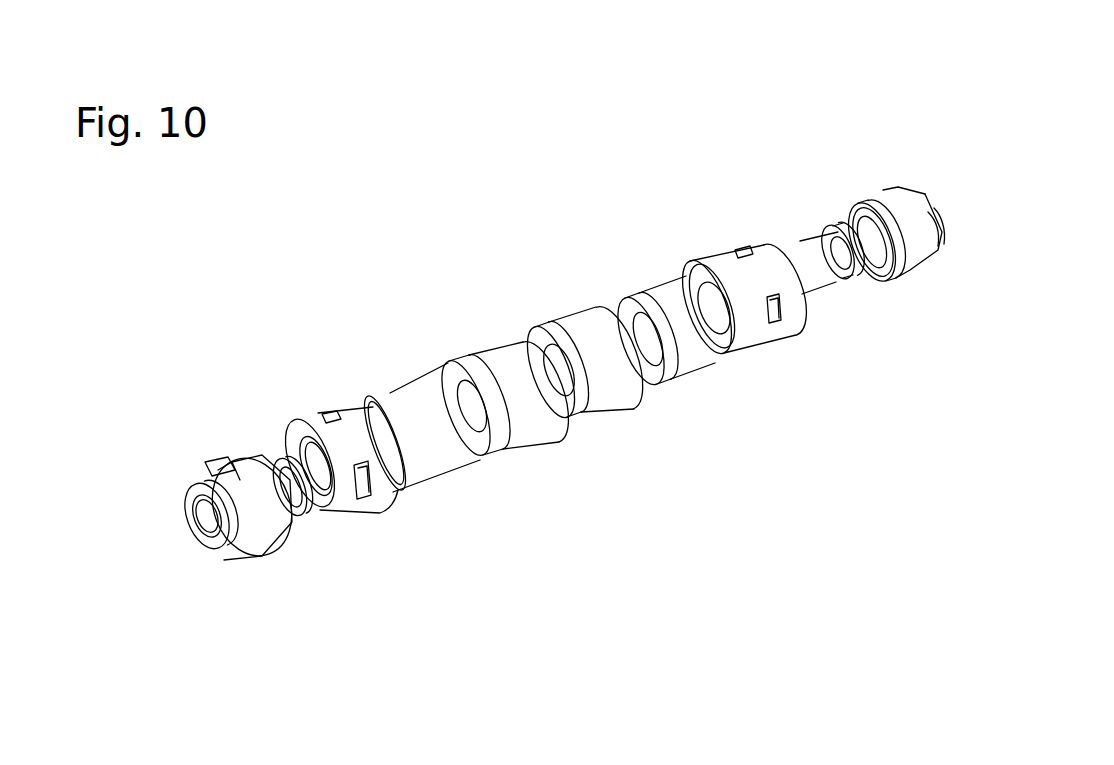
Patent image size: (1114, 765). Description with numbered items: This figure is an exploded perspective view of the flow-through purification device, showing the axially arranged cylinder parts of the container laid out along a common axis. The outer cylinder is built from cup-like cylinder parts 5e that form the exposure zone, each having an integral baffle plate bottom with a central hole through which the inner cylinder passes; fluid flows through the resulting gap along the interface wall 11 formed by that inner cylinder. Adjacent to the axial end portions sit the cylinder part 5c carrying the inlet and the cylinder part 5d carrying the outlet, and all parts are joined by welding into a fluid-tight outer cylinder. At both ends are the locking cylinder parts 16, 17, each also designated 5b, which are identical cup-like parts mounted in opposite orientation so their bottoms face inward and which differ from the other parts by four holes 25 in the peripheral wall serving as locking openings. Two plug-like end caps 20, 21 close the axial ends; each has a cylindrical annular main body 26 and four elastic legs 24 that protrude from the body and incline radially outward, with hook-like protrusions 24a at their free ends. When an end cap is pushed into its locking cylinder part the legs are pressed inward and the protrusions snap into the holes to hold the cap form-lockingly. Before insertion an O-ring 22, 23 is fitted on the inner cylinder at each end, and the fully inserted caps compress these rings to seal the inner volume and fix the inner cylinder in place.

The interface wall 11 is at (807, 247).
The locking cylinder part 5b is at (557, 378).
The cylinder part with inlet 5c is at (662, 290).
The cylinder part with outlet 5d is at (437, 410).
The exposure zone cylinder part 5e is at (583, 322).
The locking cylinder part 16 is at (367, 456).
The locking cylinder part 17 is at (763, 323).
The end cap 20 is at (272, 480).
The end cap 21 is at (890, 228).
The O-ring 22 is at (832, 226).
The O-ring 23 is at (293, 455).
The elastic legs 24 is at (872, 190).
The hook-like protrusions 24a is at (907, 185).
The holes 25 is at (360, 478).
The cylindrical annular main body 26 is at (907, 253).